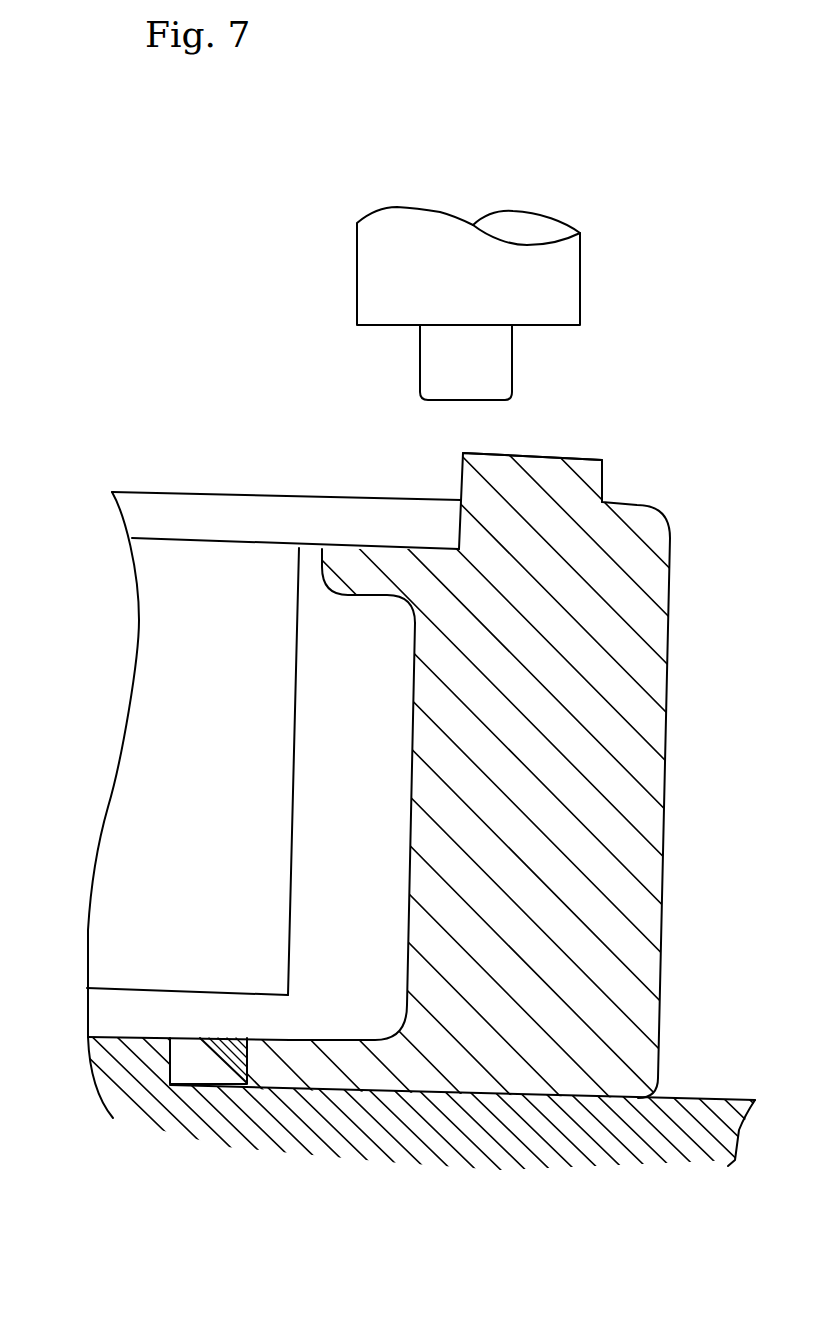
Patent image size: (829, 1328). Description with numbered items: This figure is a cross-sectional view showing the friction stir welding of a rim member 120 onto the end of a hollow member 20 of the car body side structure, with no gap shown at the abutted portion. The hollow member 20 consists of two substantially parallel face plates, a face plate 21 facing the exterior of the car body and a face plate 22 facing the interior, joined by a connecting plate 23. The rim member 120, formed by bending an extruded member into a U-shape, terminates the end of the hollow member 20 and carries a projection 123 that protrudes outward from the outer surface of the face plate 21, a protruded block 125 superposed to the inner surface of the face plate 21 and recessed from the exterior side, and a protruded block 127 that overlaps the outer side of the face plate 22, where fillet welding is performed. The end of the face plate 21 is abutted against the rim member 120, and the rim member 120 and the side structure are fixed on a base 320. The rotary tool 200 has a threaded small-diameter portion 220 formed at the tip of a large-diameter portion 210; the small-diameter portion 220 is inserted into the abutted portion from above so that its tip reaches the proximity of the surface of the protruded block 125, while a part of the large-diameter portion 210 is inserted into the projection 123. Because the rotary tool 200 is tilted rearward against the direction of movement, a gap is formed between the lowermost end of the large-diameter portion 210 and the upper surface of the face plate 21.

The hollow member 20 is at (245, 704).
The face plate 21 is at (343, 521).
The face plate 22 is at (138, 1003).
The connecting plate 23 is at (148, 712).
The rim member 120 is at (414, 816).
The projection 123 is at (572, 470).
The protruded block 125 is at (348, 588).
The protruded block 127 is at (284, 1076).
The rotary tool 200 is at (529, 239).
The large-diameter portion 210 is at (566, 277).
The small-diameter portion 220 is at (500, 356).
The base 320 is at (478, 1112).